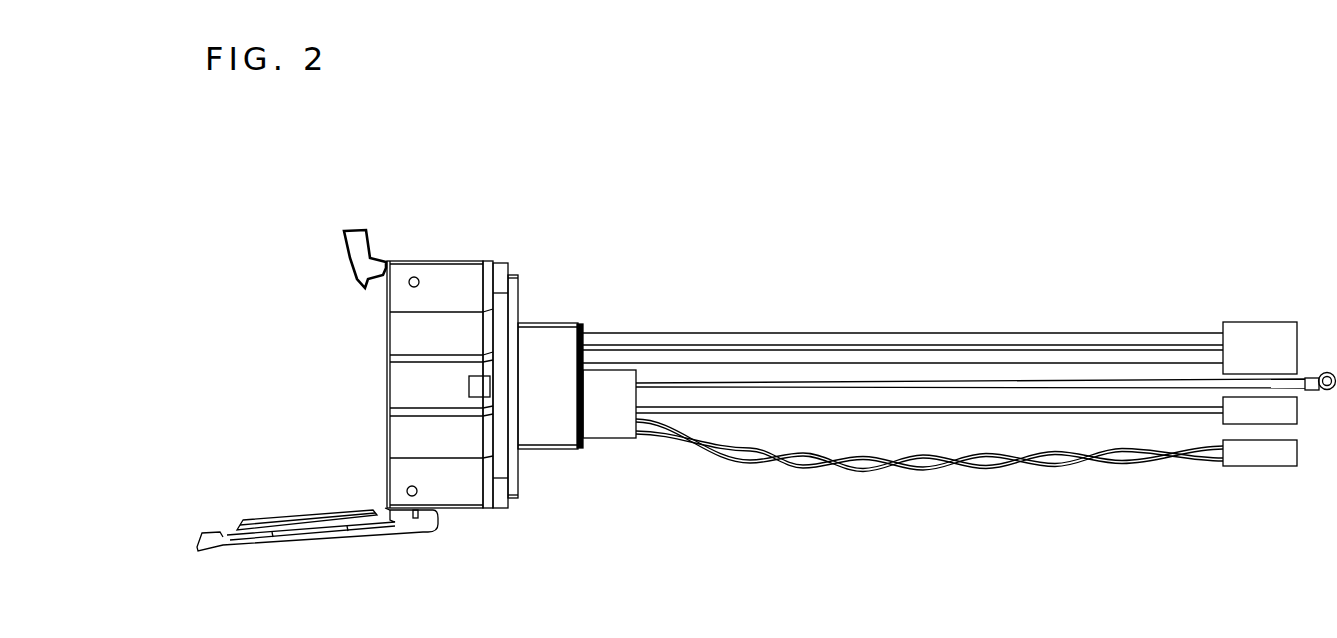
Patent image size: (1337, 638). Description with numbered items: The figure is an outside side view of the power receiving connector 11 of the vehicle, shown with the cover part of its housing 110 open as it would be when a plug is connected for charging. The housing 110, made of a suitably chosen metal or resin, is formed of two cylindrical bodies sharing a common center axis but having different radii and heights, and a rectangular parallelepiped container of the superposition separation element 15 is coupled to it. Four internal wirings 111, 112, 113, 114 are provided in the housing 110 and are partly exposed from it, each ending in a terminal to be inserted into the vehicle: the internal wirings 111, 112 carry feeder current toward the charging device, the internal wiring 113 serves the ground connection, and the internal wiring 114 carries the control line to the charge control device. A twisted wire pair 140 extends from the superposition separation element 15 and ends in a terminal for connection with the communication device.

The power receiving connector 11 is at (815, 284).
The superposition separation element 15 is at (608, 430).
The housing 110 is at (388, 248).
The internal wiring 111 is at (912, 333).
The internal wiring 112 is at (977, 350).
The internal wiring 113 is at (1073, 384).
The internal wiring 114 is at (1147, 410).
The twisted wire pair 140 is at (1046, 463).